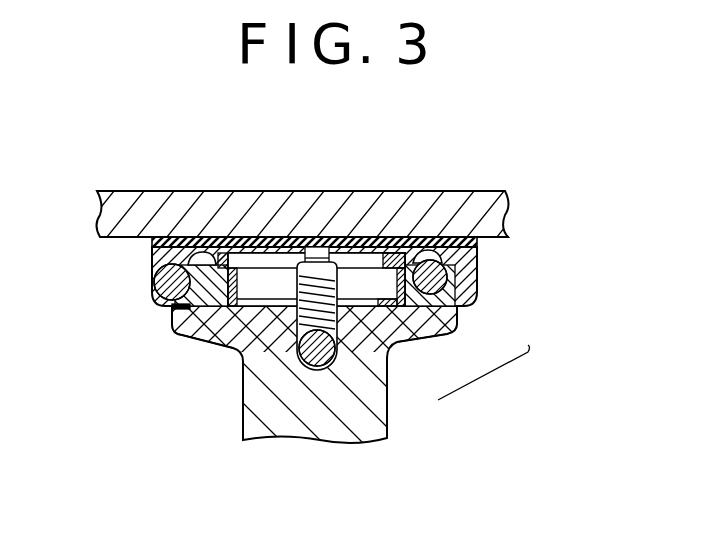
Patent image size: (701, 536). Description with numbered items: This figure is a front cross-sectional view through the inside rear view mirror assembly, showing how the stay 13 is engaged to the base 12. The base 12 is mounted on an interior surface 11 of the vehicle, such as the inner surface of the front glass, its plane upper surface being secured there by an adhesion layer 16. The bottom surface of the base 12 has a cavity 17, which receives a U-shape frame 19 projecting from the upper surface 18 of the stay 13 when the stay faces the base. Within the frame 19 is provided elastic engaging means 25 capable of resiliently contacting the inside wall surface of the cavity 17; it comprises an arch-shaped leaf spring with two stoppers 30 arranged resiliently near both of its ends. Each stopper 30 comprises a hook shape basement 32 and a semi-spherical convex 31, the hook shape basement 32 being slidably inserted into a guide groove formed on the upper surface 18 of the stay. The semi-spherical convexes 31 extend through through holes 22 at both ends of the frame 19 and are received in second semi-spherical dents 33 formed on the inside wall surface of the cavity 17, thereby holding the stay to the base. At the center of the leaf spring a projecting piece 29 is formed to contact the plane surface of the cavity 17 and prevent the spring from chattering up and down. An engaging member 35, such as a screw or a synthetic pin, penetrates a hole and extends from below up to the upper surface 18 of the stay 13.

The interior surface 11 is at (115, 238).
The base 12 is at (363, 225).
The stay 13 is at (298, 383).
The adhesion layer 16 is at (450, 247).
The cavity 17 is at (365, 256).
The upper surface of the stay 18 is at (255, 353).
The U-shape frame 19 is at (207, 252).
The through hole 22 is at (212, 312).
The elastic engaging means 25 is at (277, 253).
The projecting piece 29 is at (317, 253).
The stopper 30 is at (483, 380).
The semi-spherical convex 31 is at (158, 293).
The hook shape basement 32 is at (222, 330).
The second semi-spherical dent 33 is at (160, 272).
The engaging member 35 is at (245, 424).